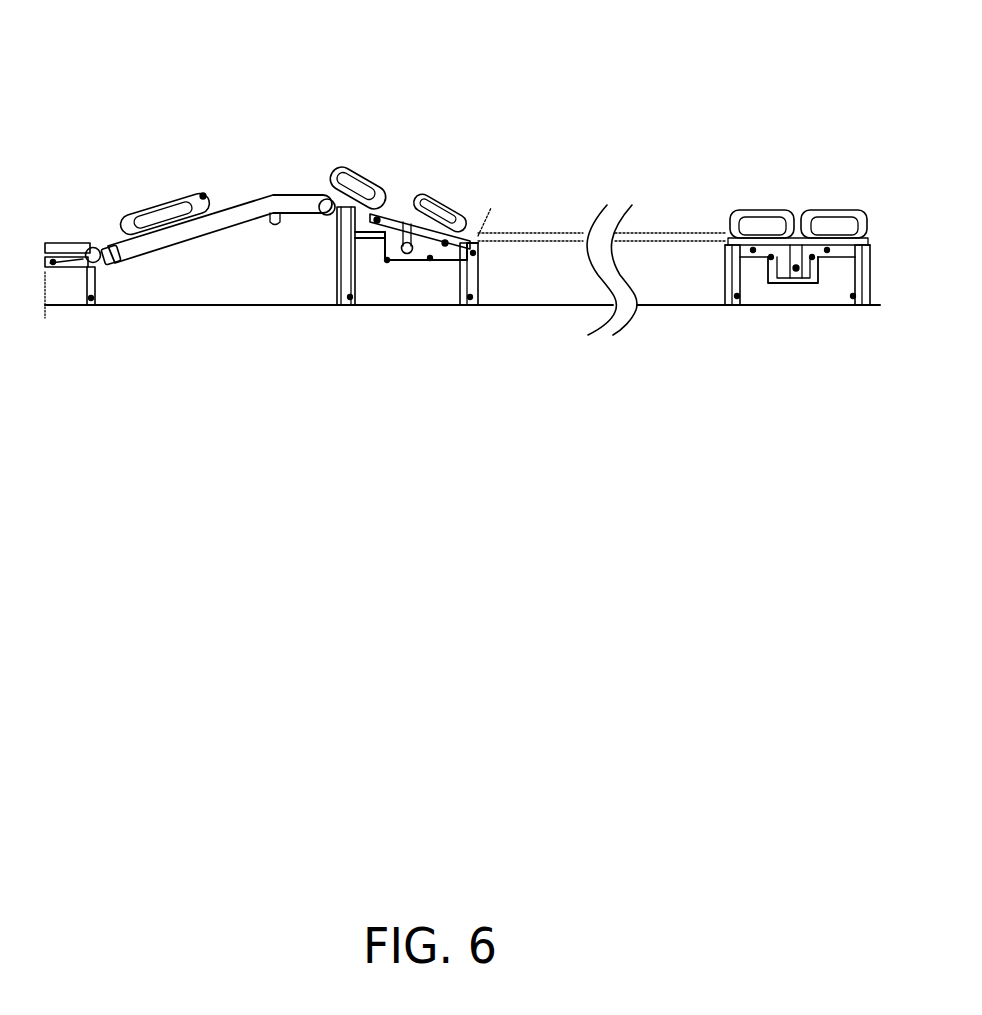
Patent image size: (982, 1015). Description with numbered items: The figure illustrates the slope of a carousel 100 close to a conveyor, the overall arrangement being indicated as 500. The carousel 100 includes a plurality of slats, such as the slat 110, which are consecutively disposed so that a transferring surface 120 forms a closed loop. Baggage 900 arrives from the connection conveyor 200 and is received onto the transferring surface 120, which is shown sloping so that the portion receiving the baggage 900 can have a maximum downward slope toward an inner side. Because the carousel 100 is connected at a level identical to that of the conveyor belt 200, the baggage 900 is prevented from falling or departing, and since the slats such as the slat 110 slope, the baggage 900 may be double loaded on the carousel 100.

The exercise apparatus assembly 500 is at (471, 49).
The carousel 100 is at (714, 193).
The slat 110 is at (403, 198).
The transferring surface 120 is at (798, 245).
The connection conveyor 200 is at (195, 232).
The baggage 900 is at (338, 168).